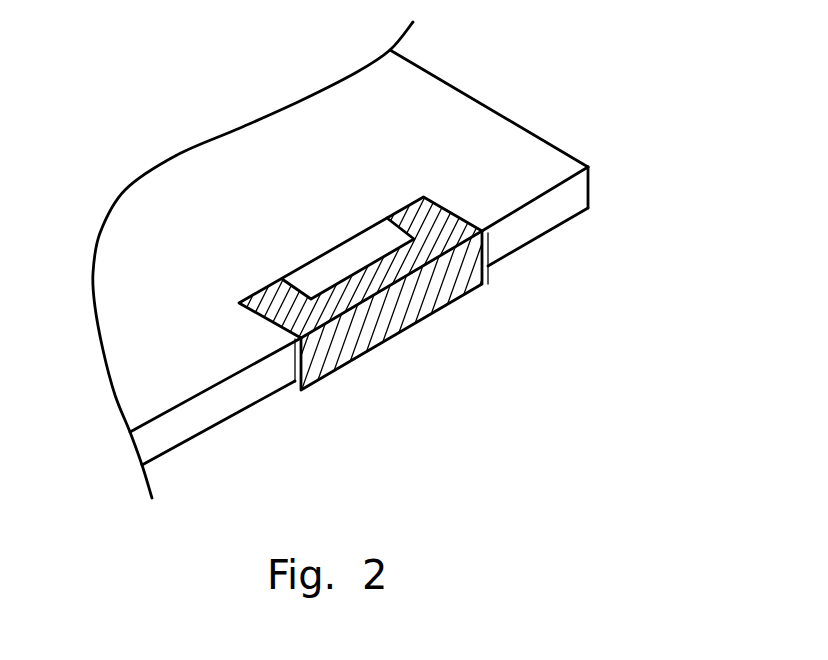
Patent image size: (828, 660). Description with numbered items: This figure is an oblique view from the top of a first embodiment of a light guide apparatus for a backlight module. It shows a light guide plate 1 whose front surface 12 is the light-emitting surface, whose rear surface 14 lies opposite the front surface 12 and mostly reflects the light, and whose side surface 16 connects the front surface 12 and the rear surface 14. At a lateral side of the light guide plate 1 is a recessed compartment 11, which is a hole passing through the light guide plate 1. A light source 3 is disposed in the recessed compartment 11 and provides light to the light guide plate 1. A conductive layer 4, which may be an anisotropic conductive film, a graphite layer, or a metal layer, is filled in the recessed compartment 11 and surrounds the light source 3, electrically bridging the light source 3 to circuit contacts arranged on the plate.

The light guide plate 1 is at (232, 63).
The light source 3 is at (327, 268).
The conductive layer 4 is at (307, 310).
The recessed compartment 11 is at (472, 199).
The front surface 12 is at (445, 118).
The rear surface 14 is at (533, 243).
The side surface 16 is at (572, 195).